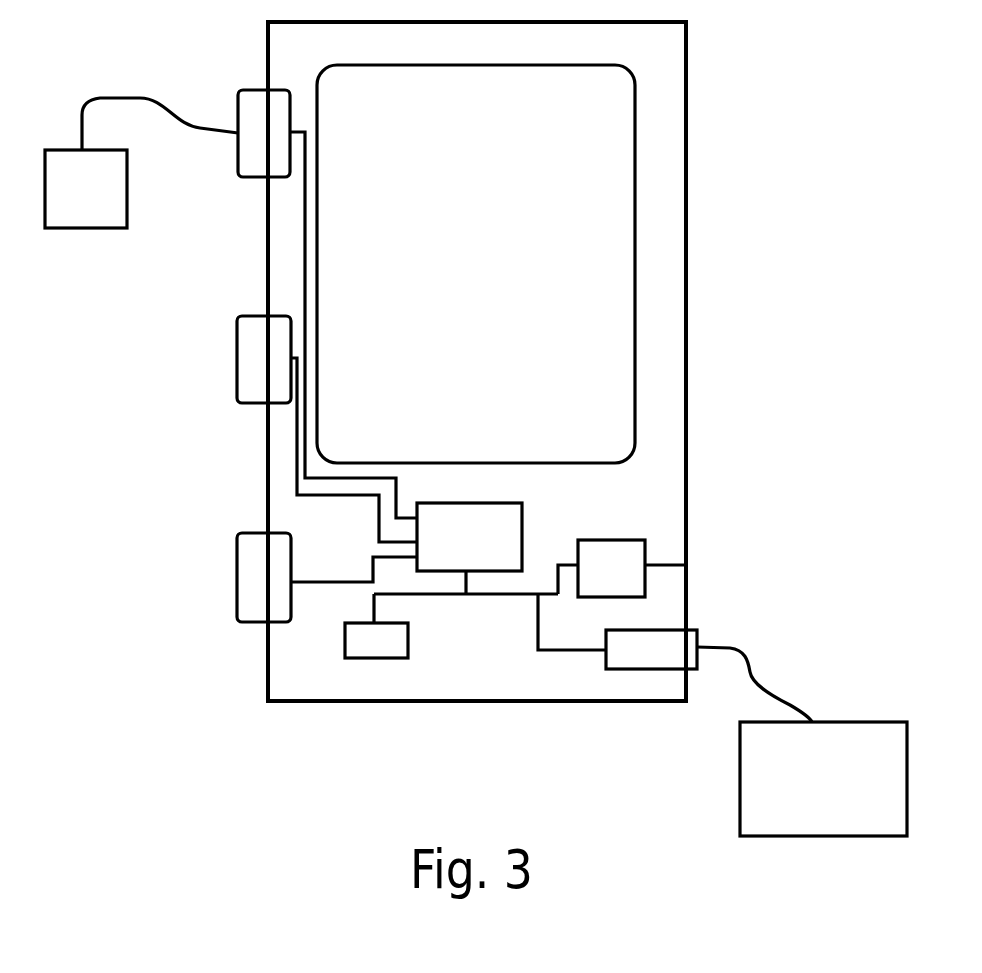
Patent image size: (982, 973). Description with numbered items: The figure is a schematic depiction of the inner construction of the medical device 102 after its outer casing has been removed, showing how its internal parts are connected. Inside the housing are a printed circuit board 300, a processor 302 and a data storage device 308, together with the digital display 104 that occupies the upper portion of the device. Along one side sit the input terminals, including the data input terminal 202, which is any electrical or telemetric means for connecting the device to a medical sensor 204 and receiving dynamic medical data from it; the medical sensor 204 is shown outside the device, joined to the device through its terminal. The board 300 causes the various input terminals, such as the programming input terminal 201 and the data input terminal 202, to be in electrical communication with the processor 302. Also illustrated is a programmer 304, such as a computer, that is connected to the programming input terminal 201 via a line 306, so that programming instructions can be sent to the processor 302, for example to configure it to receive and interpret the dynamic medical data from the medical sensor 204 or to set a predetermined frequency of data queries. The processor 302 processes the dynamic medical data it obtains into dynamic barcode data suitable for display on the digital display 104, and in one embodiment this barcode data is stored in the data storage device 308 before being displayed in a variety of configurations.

The medical device 102 is at (686, 262).
The digital display 104 is at (636, 115).
The programming input terminal 201 is at (697, 634).
The data input terminal 202 is at (237, 556).
The medical sensor 204 is at (85, 228).
The printed circuit board 300 is at (385, 659).
The processor 302 is at (523, 512).
The programmer 304 is at (820, 836).
The line 306 is at (778, 690).
The data storage device 308 is at (686, 565).